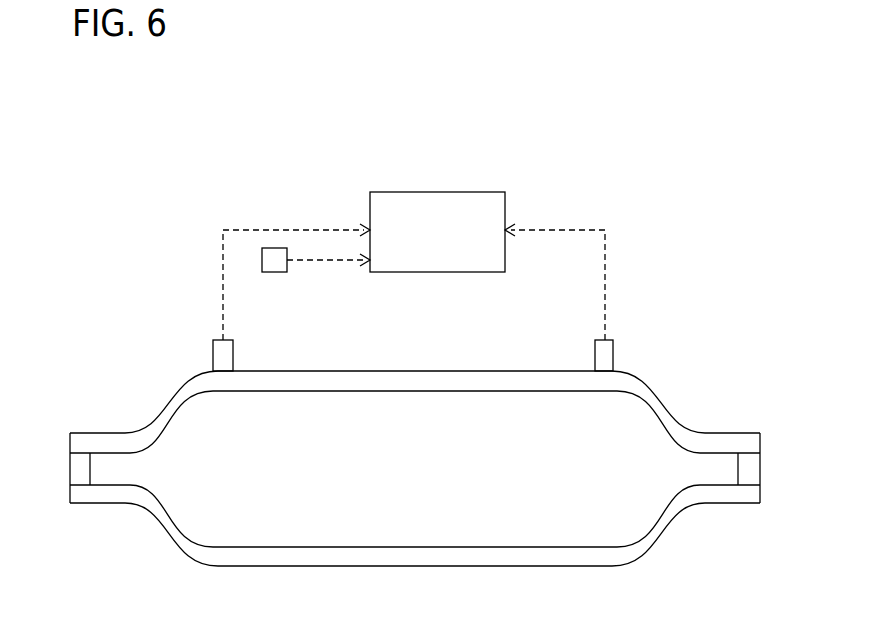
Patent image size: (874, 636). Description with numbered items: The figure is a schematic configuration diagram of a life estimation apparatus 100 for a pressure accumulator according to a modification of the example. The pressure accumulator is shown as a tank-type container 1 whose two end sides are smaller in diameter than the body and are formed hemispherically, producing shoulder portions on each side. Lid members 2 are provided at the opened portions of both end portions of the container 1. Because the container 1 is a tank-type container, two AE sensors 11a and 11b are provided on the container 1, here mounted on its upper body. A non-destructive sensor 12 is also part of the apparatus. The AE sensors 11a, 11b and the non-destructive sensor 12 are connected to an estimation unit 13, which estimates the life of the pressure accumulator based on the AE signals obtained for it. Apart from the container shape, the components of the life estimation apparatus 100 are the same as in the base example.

The container 1 is at (459, 370).
The lid member 2 is at (84, 478).
The AE sensor 11a is at (613, 366).
The AE sensor 11b is at (213, 357).
The non-destructive sensor 12 is at (274, 272).
The estimation unit 13 is at (471, 192).
The life estimation apparatus 100 is at (639, 180).